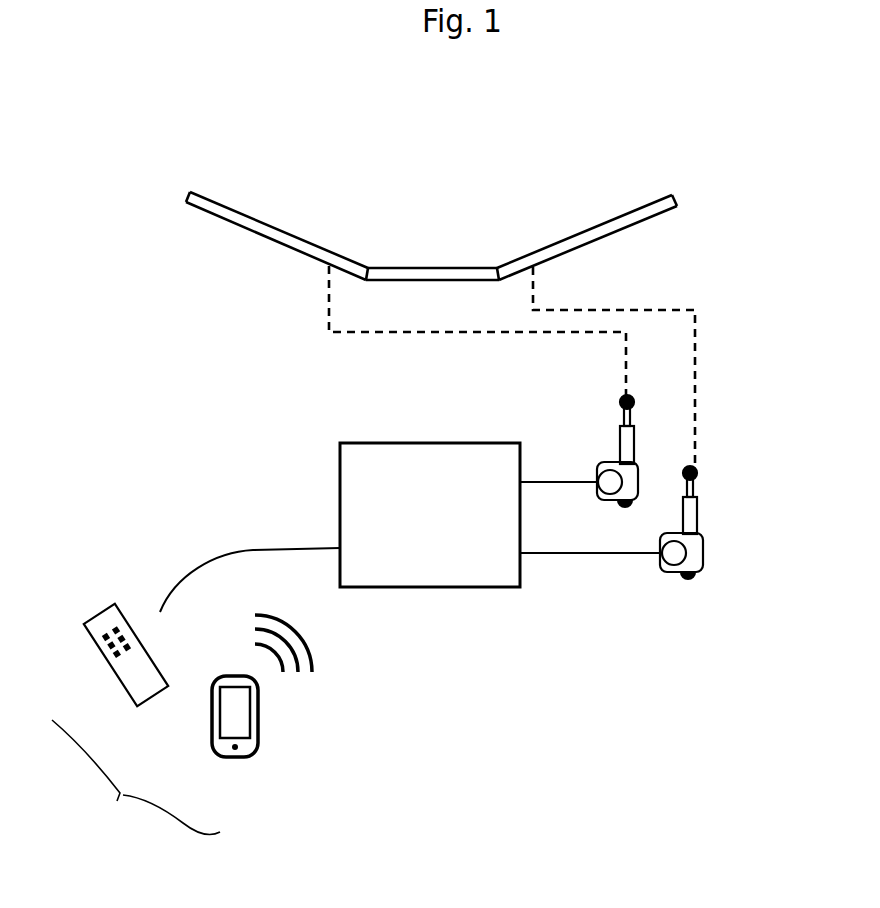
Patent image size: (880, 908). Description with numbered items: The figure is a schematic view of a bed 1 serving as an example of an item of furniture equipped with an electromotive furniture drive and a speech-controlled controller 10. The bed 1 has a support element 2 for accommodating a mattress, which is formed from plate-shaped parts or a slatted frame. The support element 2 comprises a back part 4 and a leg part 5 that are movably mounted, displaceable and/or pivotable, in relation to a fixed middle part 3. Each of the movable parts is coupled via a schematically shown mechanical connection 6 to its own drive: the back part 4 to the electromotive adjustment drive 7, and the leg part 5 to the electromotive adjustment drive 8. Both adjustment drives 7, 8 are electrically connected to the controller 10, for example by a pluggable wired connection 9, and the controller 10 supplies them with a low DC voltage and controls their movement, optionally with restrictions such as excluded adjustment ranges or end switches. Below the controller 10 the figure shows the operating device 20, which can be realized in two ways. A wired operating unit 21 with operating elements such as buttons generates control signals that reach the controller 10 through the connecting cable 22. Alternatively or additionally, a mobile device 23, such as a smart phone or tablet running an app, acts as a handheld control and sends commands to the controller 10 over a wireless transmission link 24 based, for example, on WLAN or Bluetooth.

The bed 1 is at (531, 177).
The support element 2 is at (671, 240).
The middle part 3 is at (401, 266).
The back part 4 is at (229, 207).
The leg part 5 is at (601, 224).
The mechanical connection 6 is at (560, 311).
The electromotive adjustment drive 7 is at (639, 459).
The electromotive adjustment drive 8 is at (707, 534).
The pluggable wired connection 9 is at (545, 482).
The speech-controlled controller 10 is at (404, 443).
The operating device 20 is at (136, 779).
The operating unit 21 is at (113, 640).
The connecting cable 22 is at (212, 557).
The mobile device 23 is at (213, 746).
The wireless transmission link 24 is at (253, 630).